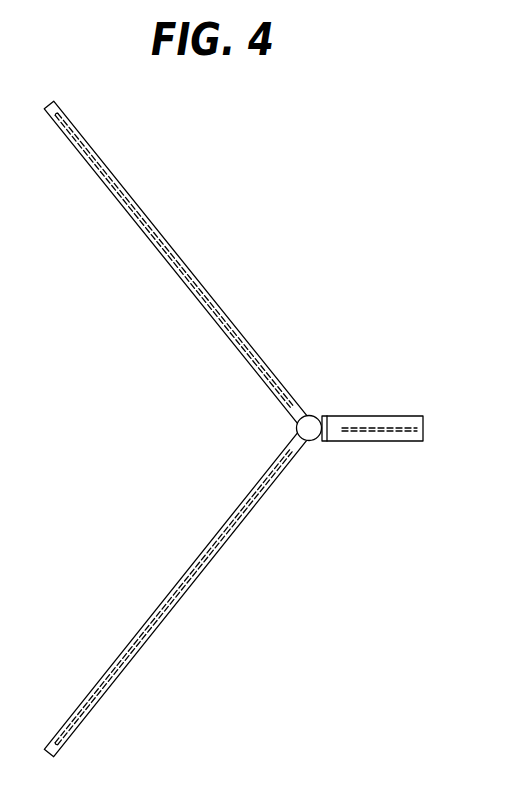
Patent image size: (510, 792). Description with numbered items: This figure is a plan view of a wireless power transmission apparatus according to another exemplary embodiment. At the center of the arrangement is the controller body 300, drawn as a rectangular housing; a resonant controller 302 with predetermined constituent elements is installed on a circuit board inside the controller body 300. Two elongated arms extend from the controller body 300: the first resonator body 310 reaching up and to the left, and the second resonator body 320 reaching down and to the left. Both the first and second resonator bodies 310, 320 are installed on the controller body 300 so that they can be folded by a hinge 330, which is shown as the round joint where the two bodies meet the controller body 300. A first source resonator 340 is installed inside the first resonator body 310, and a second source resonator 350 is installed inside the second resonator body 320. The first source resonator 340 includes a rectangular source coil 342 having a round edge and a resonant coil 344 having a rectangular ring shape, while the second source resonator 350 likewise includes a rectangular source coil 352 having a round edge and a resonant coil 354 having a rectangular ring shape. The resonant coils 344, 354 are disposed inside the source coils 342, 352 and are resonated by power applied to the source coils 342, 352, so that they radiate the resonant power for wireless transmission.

The controller body 300 is at (372, 424).
The resonant controller 302 is at (386, 433).
The first resonator body 310 is at (190, 266).
The second resonator body 320 is at (188, 590).
The hinge 330 is at (310, 432).
The first source resonator 340 is at (195, 260).
The source coil 342 is at (172, 261).
The resonant coil 344 is at (172, 250).
The second source resonator 350 is at (194, 597).
The source coil 352 is at (175, 598).
The resonant coil 354 is at (172, 608).